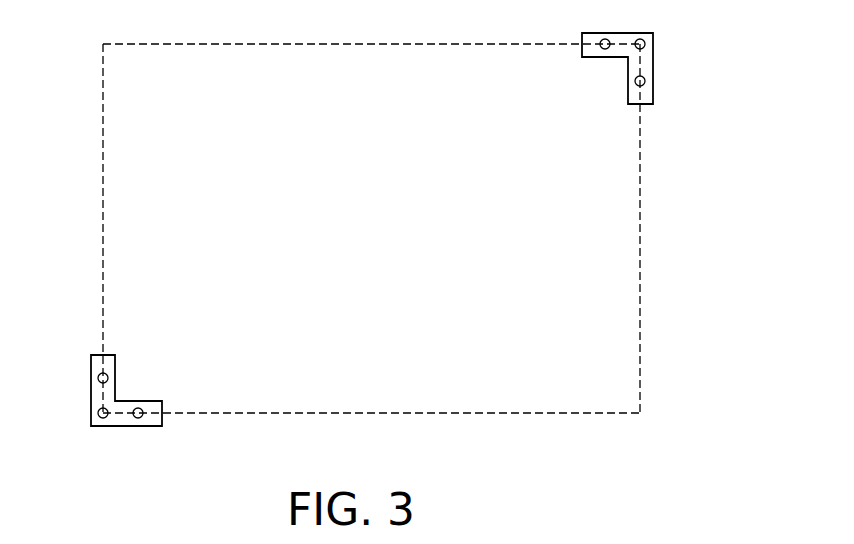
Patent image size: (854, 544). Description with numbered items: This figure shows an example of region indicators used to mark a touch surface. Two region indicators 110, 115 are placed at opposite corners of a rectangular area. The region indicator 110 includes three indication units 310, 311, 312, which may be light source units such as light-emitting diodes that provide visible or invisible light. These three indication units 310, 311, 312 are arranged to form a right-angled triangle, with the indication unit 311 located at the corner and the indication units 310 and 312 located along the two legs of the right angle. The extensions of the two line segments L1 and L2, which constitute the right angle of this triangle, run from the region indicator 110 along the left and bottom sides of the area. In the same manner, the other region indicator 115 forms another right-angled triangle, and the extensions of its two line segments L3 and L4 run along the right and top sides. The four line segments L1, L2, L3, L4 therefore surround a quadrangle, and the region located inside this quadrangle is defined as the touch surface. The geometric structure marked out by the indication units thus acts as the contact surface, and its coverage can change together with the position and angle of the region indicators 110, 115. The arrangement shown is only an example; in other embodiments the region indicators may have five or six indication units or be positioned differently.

The region indicator 110 is at (91, 410).
The region indicator 115 is at (653, 62).
The indication unit 310 is at (98, 378).
The indication unit 311 is at (104, 427).
The indication unit 312 is at (139, 427).
The line segment L1 is at (85, 228).
The line segment L2 is at (371, 435).
The line segment L3 is at (659, 228).
The line segment L4 is at (371, 25).